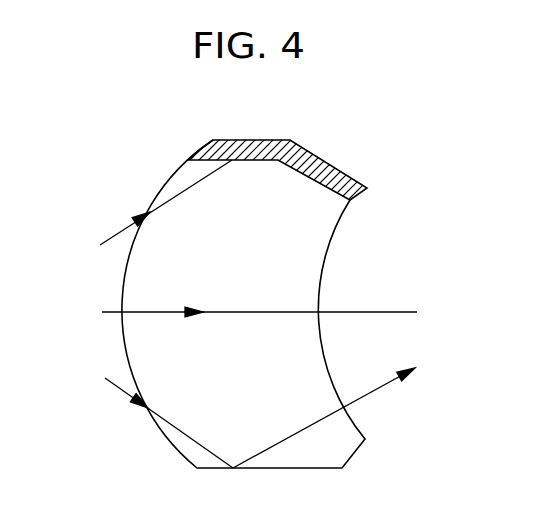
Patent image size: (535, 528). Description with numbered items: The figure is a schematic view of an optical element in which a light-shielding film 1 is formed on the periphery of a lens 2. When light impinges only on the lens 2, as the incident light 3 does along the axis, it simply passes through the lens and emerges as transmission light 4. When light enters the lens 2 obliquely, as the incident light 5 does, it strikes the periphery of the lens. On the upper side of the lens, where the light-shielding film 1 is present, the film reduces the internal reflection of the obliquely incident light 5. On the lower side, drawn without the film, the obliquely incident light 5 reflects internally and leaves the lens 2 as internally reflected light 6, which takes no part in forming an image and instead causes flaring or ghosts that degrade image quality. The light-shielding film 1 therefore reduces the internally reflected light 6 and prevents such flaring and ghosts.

The light-shielding film 1 is at (330, 172).
The lens 2 is at (313, 235).
The incident light 3 is at (112, 310).
The transmission light 4 is at (388, 312).
The incident light 5 is at (112, 236).
The internally reflected light 6 is at (382, 387).